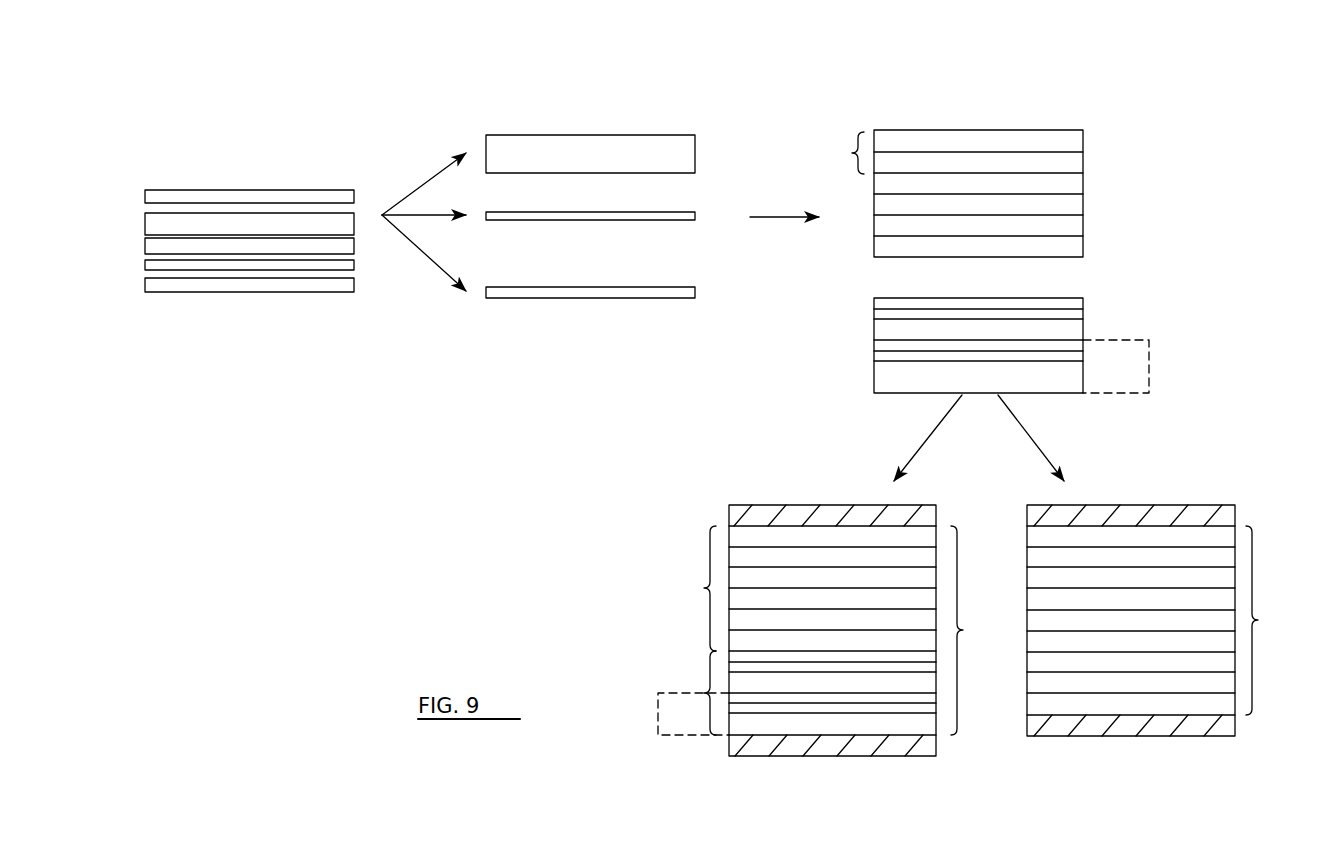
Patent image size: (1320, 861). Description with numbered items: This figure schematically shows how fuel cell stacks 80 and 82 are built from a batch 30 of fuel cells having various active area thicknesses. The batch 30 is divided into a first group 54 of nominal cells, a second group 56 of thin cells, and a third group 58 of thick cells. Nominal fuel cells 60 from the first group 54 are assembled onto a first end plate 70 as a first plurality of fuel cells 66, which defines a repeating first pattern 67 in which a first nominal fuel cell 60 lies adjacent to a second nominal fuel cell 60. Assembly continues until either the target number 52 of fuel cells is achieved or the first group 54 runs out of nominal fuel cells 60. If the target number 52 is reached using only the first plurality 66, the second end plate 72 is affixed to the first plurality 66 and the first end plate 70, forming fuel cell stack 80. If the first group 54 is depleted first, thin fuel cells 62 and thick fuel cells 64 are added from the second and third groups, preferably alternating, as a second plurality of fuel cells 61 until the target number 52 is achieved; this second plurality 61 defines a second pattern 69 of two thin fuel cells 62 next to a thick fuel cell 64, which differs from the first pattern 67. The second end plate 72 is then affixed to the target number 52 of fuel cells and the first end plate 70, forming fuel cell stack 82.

The batch of fuel cells 30 is at (284, 163).
The third group 58 is at (670, 135).
The second group 56 is at (670, 212).
The first group 54 is at (669, 298).
The first plurality of fuel cells 66 is at (1066, 103).
The first pattern 67 is at (837, 153).
The nominal fuel cell 60 is at (1083, 182).
The second plurality of fuel cells 61 is at (862, 297).
The thick fuel cell 64 is at (874, 372).
The thin fuel cell 62 is at (1083, 315).
The second pattern 69 is at (1149, 367).
The second end plate 72 is at (938, 515).
The first end plate 70 is at (758, 745).
The target number of fuel cells 52 is at (1134, 630).
The fuel cell stack 82 is at (862, 767).
The fuel cell stack 80 is at (1169, 767).